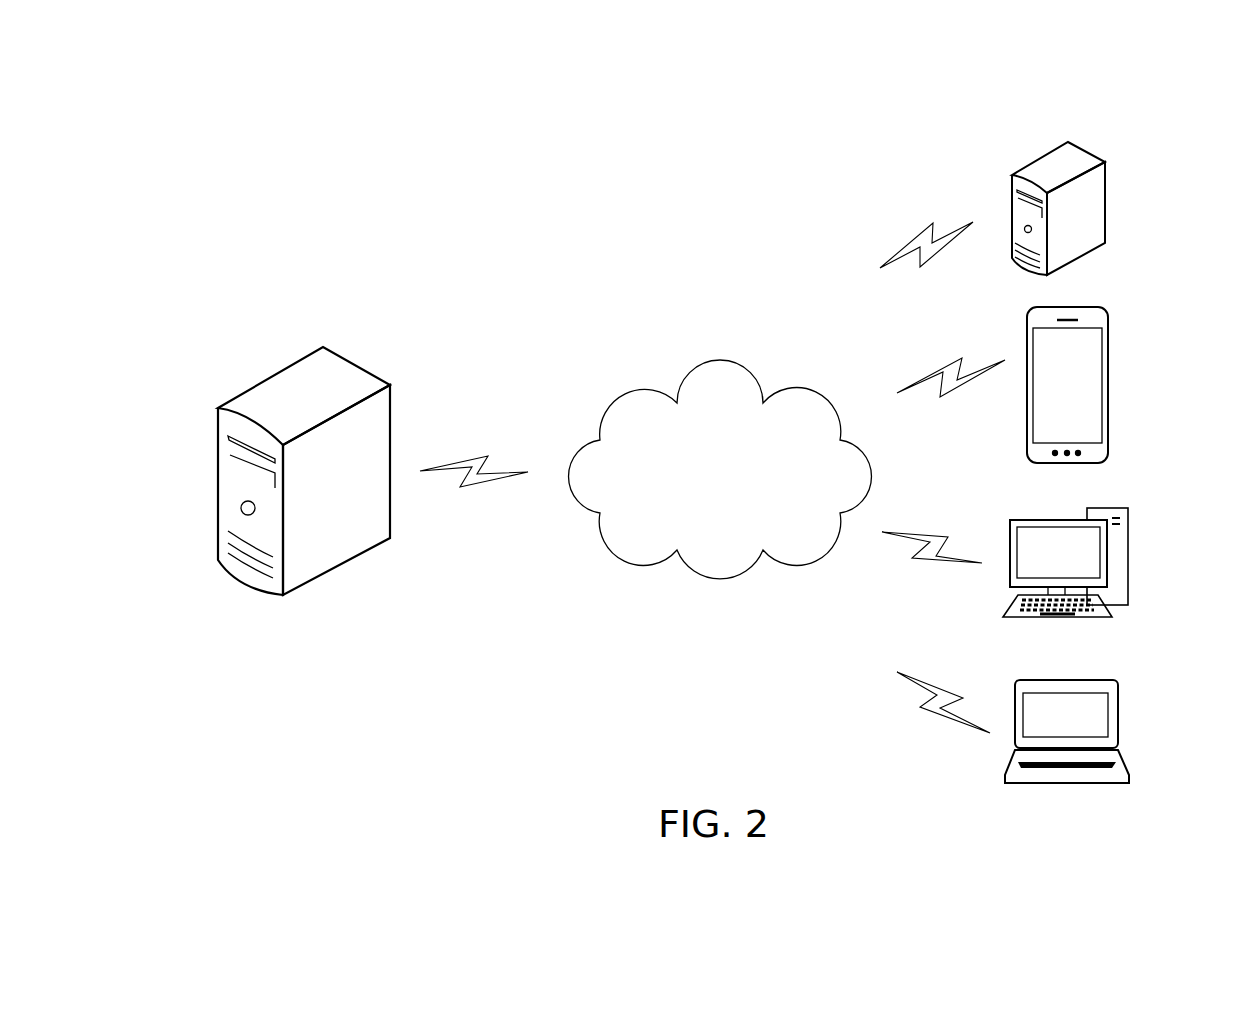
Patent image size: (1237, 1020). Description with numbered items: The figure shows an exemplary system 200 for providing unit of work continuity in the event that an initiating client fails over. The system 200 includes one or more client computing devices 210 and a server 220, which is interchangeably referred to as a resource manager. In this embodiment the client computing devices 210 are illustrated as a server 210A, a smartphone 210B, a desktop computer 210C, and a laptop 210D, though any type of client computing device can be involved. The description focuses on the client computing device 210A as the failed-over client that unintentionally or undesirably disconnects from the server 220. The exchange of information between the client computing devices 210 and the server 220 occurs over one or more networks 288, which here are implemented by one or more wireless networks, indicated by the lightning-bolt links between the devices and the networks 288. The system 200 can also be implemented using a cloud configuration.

The system 200 is at (275, 83).
The client computing devices 210 is at (1070, 86).
The client computing device (server) 210A is at (1140, 173).
The smartphone 210B is at (1137, 336).
The desktop computer 210C is at (1152, 522).
The laptop 210D is at (1152, 695).
The server 220 is at (325, 312).
The networks 288 is at (720, 469).